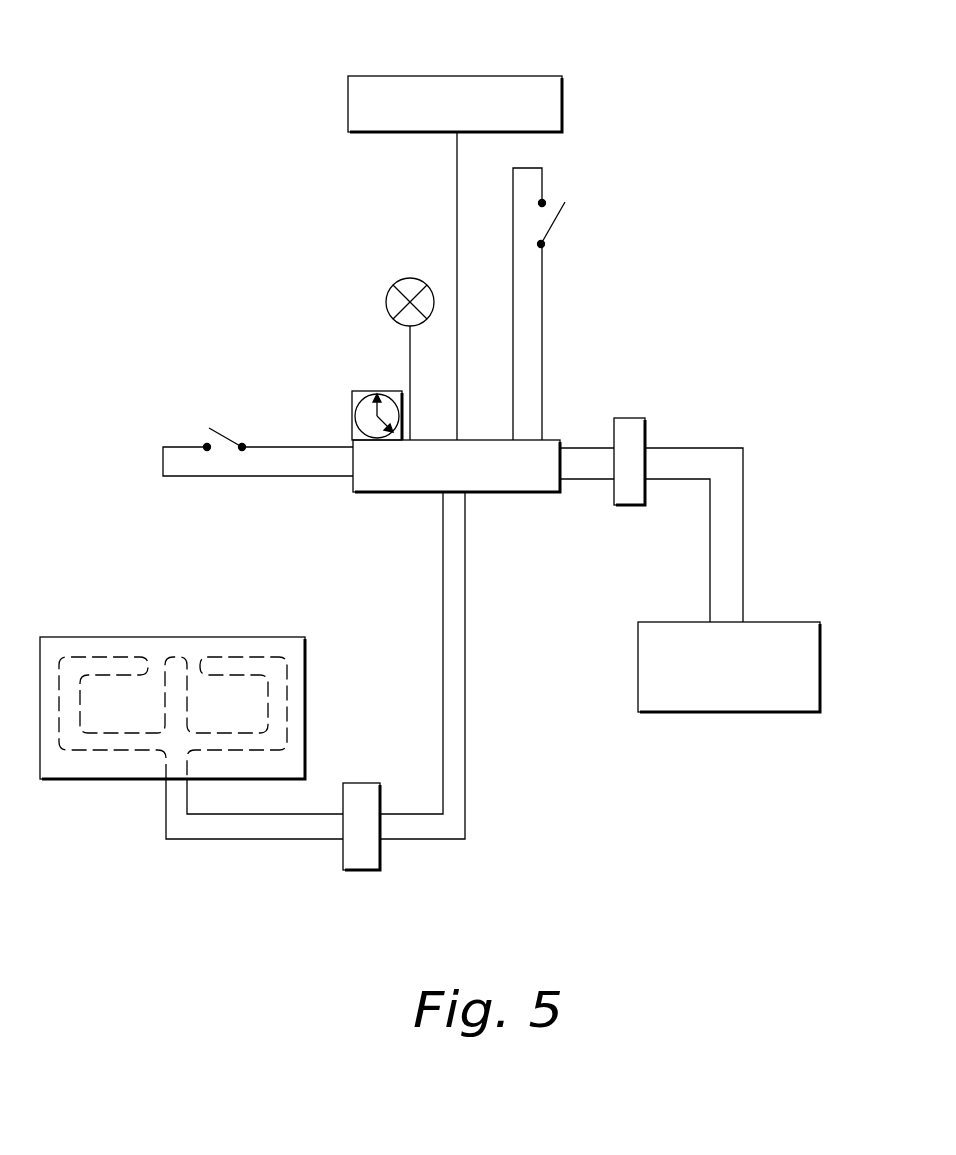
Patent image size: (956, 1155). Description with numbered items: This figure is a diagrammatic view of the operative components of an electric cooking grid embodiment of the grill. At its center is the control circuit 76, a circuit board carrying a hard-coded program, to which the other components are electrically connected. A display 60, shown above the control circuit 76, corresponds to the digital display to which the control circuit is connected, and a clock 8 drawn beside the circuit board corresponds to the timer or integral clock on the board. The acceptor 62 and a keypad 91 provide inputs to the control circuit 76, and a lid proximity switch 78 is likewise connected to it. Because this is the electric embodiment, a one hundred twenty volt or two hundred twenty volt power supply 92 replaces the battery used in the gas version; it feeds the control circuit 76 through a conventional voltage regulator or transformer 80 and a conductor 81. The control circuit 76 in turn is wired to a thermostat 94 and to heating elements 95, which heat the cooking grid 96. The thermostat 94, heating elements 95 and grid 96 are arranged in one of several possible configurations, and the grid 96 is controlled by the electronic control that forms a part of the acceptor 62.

The display 60 is at (543, 76).
The acceptor 62 is at (558, 216).
The control circuit 76 is at (523, 493).
The lid proximity switch 78 is at (393, 287).
The timer 8 is at (365, 391).
The voltage regulator or transformer 80 is at (630, 418).
The conductor 81 is at (743, 550).
The keypad 91 is at (183, 447).
The power supply 92 is at (763, 712).
The thermostat 94 is at (360, 870).
The heating elements 95 is at (217, 839).
The cooking grid 96 is at (100, 637).